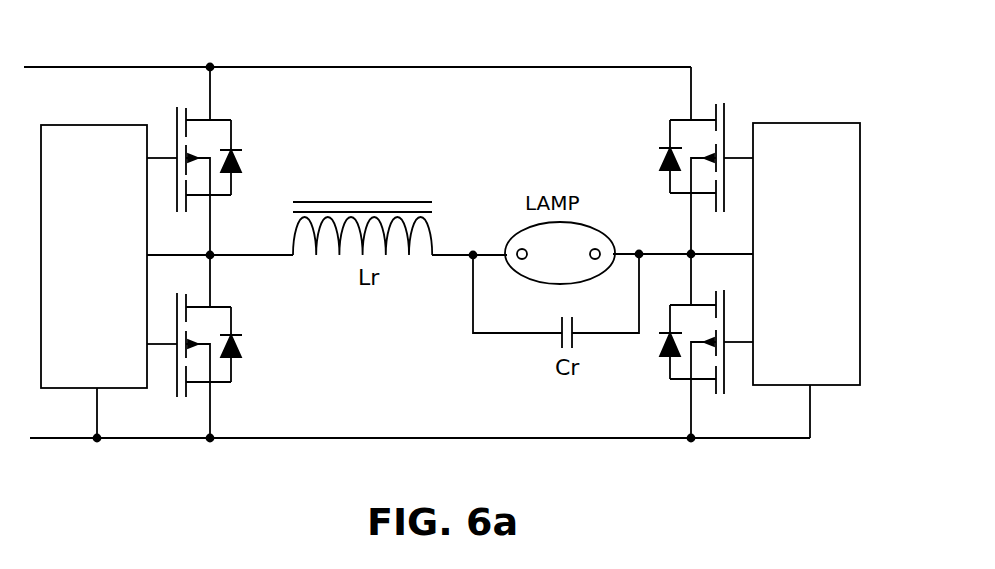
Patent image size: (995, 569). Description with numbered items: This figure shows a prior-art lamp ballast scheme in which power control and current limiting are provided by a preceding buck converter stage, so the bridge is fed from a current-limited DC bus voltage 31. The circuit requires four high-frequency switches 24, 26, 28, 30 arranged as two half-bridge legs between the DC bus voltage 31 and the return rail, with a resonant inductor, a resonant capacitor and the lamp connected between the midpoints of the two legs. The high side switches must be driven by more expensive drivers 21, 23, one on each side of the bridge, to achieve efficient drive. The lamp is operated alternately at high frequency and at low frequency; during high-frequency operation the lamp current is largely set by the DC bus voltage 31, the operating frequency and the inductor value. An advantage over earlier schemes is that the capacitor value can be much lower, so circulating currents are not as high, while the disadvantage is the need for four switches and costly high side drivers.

The driver 21 is at (90, 124).
The driver 23 is at (805, 122).
The high-frequency switch 24 is at (250, 127).
The high-frequency switch 26 is at (252, 314).
The high-frequency switch 28 is at (658, 128).
The high-frequency switch 30 is at (658, 378).
The DC bus voltage 31 is at (393, 40).